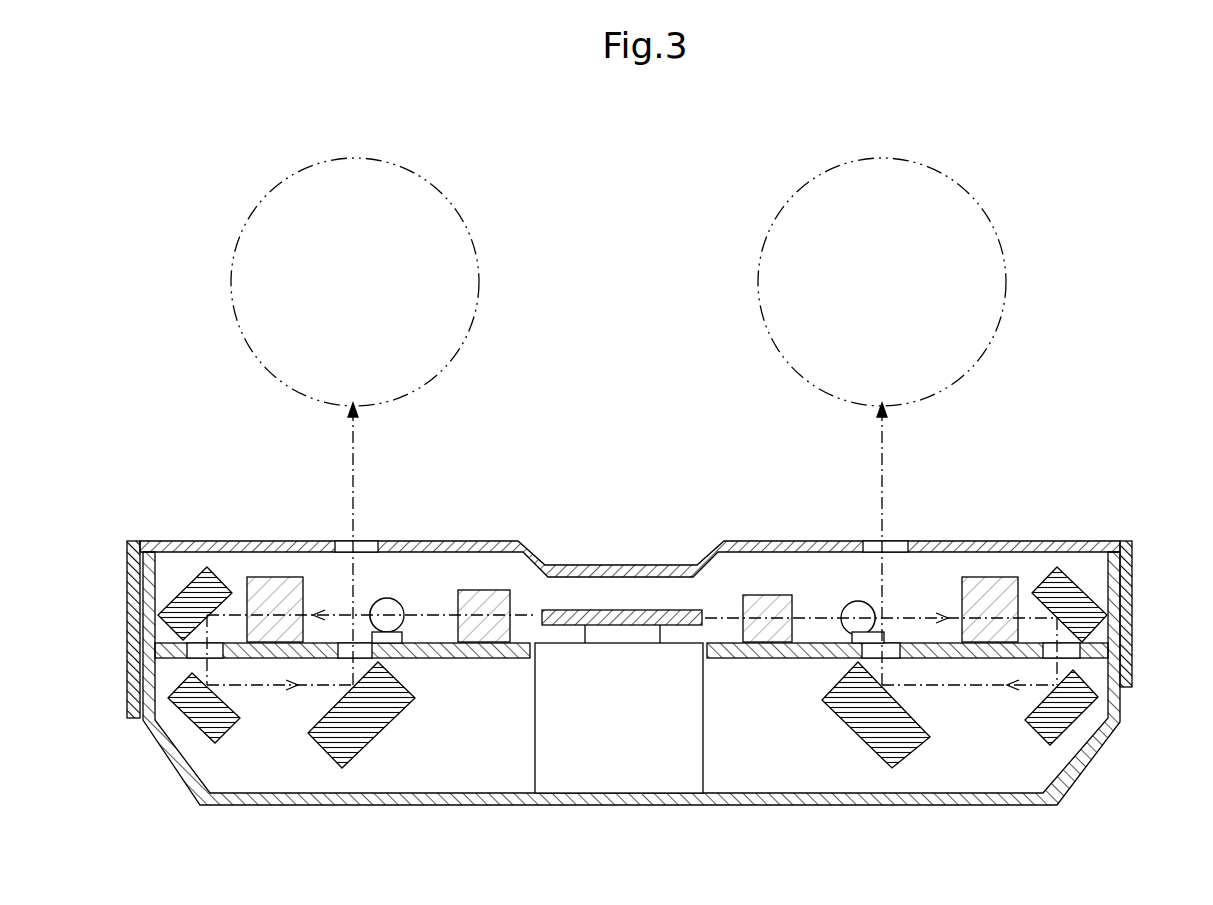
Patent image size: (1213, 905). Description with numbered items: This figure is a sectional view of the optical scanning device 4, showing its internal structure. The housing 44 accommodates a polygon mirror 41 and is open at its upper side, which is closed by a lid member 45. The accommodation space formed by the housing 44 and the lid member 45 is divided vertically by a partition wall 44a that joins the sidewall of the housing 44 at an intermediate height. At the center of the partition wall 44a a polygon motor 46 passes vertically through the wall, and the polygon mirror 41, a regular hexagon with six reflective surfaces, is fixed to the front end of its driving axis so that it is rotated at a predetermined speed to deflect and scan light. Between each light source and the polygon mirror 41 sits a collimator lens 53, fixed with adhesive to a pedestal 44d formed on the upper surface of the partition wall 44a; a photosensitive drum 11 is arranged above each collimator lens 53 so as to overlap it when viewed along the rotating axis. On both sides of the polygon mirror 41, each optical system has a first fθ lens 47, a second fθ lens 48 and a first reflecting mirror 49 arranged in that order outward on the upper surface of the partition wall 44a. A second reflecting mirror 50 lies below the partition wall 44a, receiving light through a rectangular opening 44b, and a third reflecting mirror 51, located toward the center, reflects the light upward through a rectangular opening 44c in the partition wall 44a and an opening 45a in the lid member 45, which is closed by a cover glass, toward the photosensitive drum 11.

The optical scanning device 4 is at (137, 538).
The photosensitive drum 11 is at (308, 166).
The polygon mirror 41 is at (625, 610).
The housing 44 is at (1130, 700).
The partition wall 44a is at (720, 643).
The rectangular opening 44b is at (227, 643).
The rectangular opening 44c is at (343, 658).
The pedestal 44d is at (370, 637).
The lid member 45 is at (1112, 541).
The opening 45a is at (368, 541).
The polygon motor 46 is at (535, 743).
The first fθ lens 47 is at (488, 592).
The second fθ lens 48 is at (284, 590).
The first reflecting mirror 49 is at (198, 568).
The second reflecting mirror 50 is at (192, 722).
The third reflecting mirror 51 is at (348, 737).
The collimator lens 53 is at (398, 598).